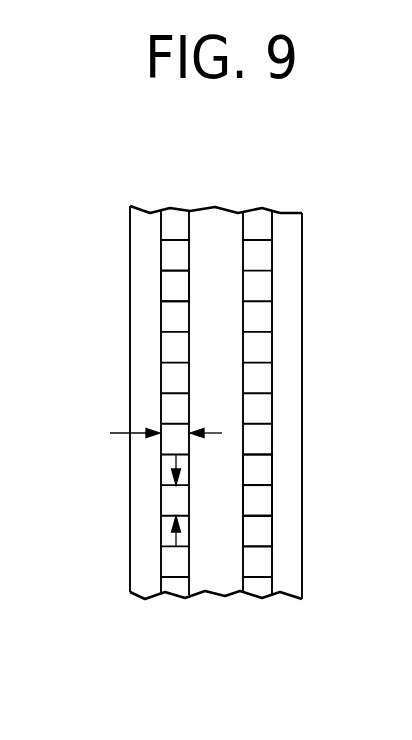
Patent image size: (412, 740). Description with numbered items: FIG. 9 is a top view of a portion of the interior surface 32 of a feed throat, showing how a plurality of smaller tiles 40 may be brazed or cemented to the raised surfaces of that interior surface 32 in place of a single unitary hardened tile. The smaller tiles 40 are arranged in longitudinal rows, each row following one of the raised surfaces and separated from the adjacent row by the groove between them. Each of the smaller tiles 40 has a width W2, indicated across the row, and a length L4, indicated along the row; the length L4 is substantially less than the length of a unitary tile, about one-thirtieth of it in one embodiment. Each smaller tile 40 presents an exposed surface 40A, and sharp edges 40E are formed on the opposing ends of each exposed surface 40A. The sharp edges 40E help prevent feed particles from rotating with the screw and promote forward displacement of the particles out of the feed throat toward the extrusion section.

The interior surface 32 is at (143, 582).
The smaller tiles 40 is at (177, 250).
The exposed surface 40A is at (177, 286).
The sharp edges 40E is at (318, 551).
The width W2 is at (127, 433).
The length L4 is at (178, 553).